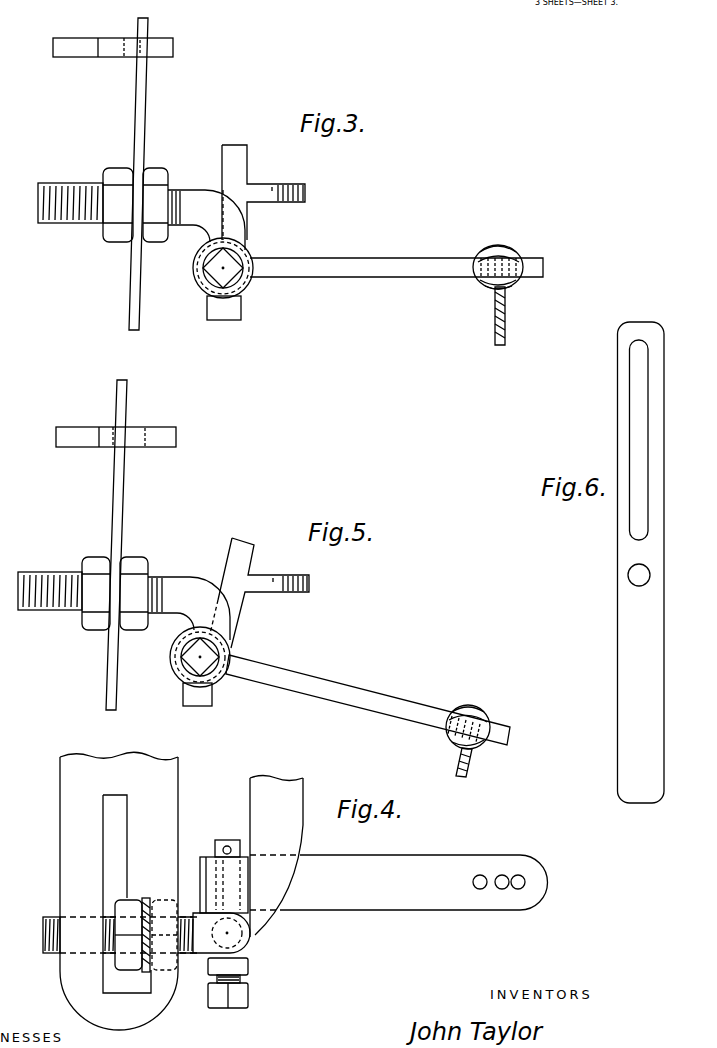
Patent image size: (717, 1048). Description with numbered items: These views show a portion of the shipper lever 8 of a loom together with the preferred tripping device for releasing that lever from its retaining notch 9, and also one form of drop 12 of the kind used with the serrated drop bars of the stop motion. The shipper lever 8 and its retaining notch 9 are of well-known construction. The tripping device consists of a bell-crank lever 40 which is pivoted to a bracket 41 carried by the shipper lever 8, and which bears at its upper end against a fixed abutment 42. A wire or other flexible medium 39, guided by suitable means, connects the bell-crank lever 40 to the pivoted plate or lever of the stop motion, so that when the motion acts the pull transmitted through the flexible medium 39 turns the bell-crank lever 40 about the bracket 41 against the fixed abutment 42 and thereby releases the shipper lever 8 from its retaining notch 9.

In FIG. 3, the shipper lever 8 is at (144, 107).
In FIG. 5, the shipper lever 8 is at (121, 494).
In FIG. 4, the shipper lever 8 is at (147, 973).
In FIG. 3, the retaining notch 9 is at (148, 38).
In FIG. 5, the retaining notch 9 is at (150, 427).
In FIG. 4, the retaining notch 9 is at (128, 897).
In FIG. 6, the drop 12 is at (628, 549).
In FIG. 3, the wire or flexible medium 39 is at (495, 310).
In FIG. 5, the wire or flexible medium 39 is at (468, 766).
In FIG. 3, the bell-crank lever 40 is at (378, 275).
In FIG. 5, the bell-crank lever 40 is at (313, 691).
In FIG. 4, the bell-crank lever 40 is at (399, 882).
In FIG. 3, the bracket 41 is at (205, 226).
In FIG. 5, the bracket 41 is at (182, 612).
In FIG. 4, the bracket 41 is at (252, 943).
In FIG. 3, the fixed abutment 42 is at (272, 191).
In FIG. 5, the fixed abutment 42 is at (267, 586).
In FIG. 4, the fixed abutment 42 is at (276, 857).